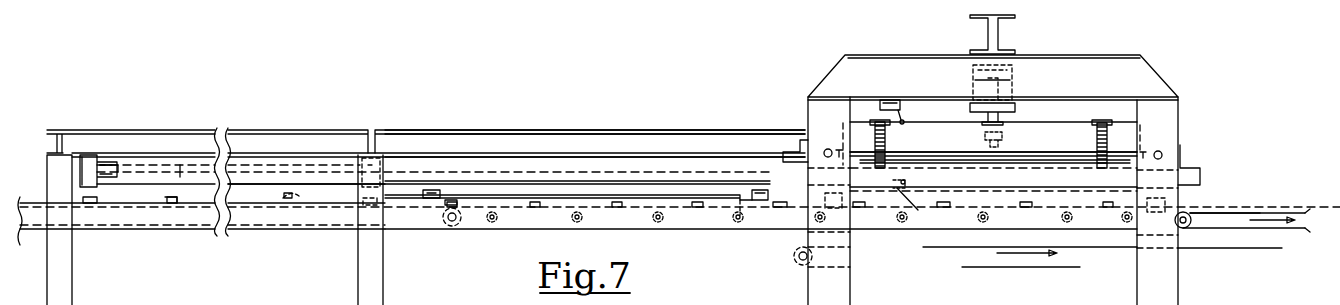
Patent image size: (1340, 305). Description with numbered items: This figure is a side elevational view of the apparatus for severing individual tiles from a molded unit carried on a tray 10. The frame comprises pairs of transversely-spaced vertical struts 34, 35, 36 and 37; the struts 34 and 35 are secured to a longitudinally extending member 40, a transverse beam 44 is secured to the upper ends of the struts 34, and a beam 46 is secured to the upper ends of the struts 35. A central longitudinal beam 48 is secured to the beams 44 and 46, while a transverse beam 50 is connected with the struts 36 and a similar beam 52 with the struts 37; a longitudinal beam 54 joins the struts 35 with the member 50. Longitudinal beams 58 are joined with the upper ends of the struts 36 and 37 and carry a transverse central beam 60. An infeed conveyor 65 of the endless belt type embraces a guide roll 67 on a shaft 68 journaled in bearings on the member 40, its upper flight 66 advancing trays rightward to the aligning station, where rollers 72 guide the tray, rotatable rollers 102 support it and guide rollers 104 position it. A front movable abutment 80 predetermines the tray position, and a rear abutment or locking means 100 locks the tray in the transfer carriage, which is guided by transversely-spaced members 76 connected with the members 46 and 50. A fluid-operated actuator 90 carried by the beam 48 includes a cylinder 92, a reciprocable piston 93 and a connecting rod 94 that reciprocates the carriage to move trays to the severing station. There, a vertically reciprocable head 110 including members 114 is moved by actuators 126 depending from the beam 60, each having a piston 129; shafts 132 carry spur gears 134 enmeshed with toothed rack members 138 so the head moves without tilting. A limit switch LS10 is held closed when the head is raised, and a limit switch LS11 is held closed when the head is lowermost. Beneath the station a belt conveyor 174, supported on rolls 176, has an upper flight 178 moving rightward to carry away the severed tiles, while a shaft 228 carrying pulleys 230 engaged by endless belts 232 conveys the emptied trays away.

The carrier or tray 10 is at (484, 191).
The vertical frame member or strut 34 is at (72, 282).
The vertical frame member or strut 35 is at (358, 290).
The vertical frame member or strut 36 is at (806, 286).
The vertical frame member or strut 37 is at (1178, 272).
The longitudinally extending member 40 is at (345, 233).
The transversely extending beam or frame member 44 is at (45, 128).
The beam or frame member 46 is at (370, 130).
The longitudinally extending beam or frame member 48 is at (266, 129).
The transversely extending beam or frame member 50 is at (798, 150).
The transversely extending beam 52 is at (1190, 150).
The longitudinally-extending beam or frame member 54 is at (540, 130).
The longitudinally extending beam 58 is at (1060, 30).
The central beam or frame member 60 is at (988, 32).
The infeed conveyor 65 is at (290, 220).
The upper flight 66 is at (173, 202).
The guide roll 67 is at (452, 238).
The shaft 68 is at (453, 220).
The roller 72 is at (161, 193).
The transversely-spaced member 76 is at (637, 168).
The front movable abutment 80 is at (760, 201).
The fluid-operated actuator 90 is at (272, 198).
The cylinder 92 is at (120, 185).
The reciprocable piston 93 is at (116, 167).
The connecting rod 94 is at (184, 172).
The rear abutment member or locking means 100 is at (422, 201).
The rotatable roller 102 is at (488, 224).
The guide roller 104 is at (521, 202).
The vertically reciprocable head construction 110 is at (1055, 118).
The member of head 114 is at (959, 122).
The actuator 126 is at (965, 69).
The piston 129 is at (1012, 74).
The shaft 132 is at (957, 150).
The spur gear 134 is at (875, 145).
The toothed rack means or member 138 is at (875, 122).
The conveyor means 174 is at (962, 267).
The roll 176 is at (798, 258).
The upper flight 178 is at (923, 247).
The shaft 228 is at (1190, 218).
The pulley 230 is at (1185, 213).
The endless belt 232 is at (1302, 210).
The limit switch LS10 is at (887, 100).
The limit switch LS11 is at (913, 210).